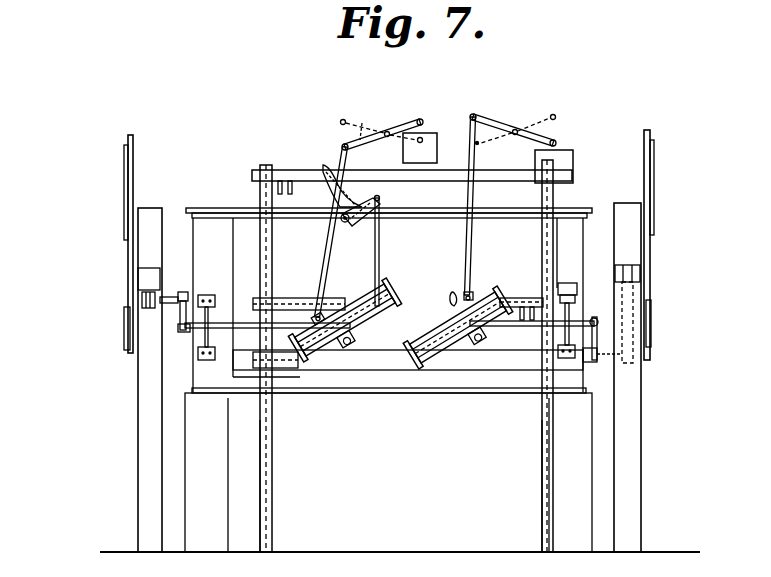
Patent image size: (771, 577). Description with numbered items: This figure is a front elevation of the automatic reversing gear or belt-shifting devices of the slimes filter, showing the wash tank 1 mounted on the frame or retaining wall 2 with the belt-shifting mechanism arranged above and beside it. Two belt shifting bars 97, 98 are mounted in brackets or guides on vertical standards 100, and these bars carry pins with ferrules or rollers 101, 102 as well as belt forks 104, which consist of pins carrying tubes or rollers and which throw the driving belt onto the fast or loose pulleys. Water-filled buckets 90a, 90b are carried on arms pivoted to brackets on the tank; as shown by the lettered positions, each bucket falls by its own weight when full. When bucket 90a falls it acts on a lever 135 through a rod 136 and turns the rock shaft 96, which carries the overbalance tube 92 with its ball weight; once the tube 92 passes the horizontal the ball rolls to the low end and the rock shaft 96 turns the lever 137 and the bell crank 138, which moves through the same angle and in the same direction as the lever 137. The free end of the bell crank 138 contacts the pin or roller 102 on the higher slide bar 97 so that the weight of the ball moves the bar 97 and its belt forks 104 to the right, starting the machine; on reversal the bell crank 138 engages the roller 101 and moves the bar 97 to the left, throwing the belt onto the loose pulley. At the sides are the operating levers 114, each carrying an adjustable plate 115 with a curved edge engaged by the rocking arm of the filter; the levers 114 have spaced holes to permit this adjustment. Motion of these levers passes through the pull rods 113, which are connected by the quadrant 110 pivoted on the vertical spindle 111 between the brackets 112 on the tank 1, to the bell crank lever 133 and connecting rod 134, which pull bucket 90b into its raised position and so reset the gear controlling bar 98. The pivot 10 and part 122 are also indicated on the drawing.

The wash tank 1 is at (389, 300).
The frame or retaining wall 2 is at (388, 470).
The pivot 10 is at (602, 325).
The bucket 90a is at (420, 148).
The bucket 90b is at (573, 162).
The overbalance tube 92 is at (394, 290).
The rock shaft 96 is at (348, 352).
The belt shifting bar 97 is at (272, 170).
The belt shifting bar 98 is at (517, 303).
The vertical standards 100 is at (267, 458).
The ferrule or roller 101 is at (320, 170).
The ferrule or roller 102 is at (350, 174).
The belt forks 104 is at (286, 193).
The quadrant 110 is at (181, 330).
The vertical spindle 111 is at (199, 318).
The brackets 112 is at (204, 295).
The pull rods 113 is at (250, 328).
The operating levers 114 is at (126, 266).
The plate 115 is at (128, 170).
The plate 122 is at (124, 335).
The bell crank lever 133 is at (452, 297).
The connecting rod 134 is at (470, 197).
The lever 135 is at (321, 310).
The rod 136 is at (336, 245).
The lever 137 is at (366, 324).
The bell crank 138 is at (380, 200).